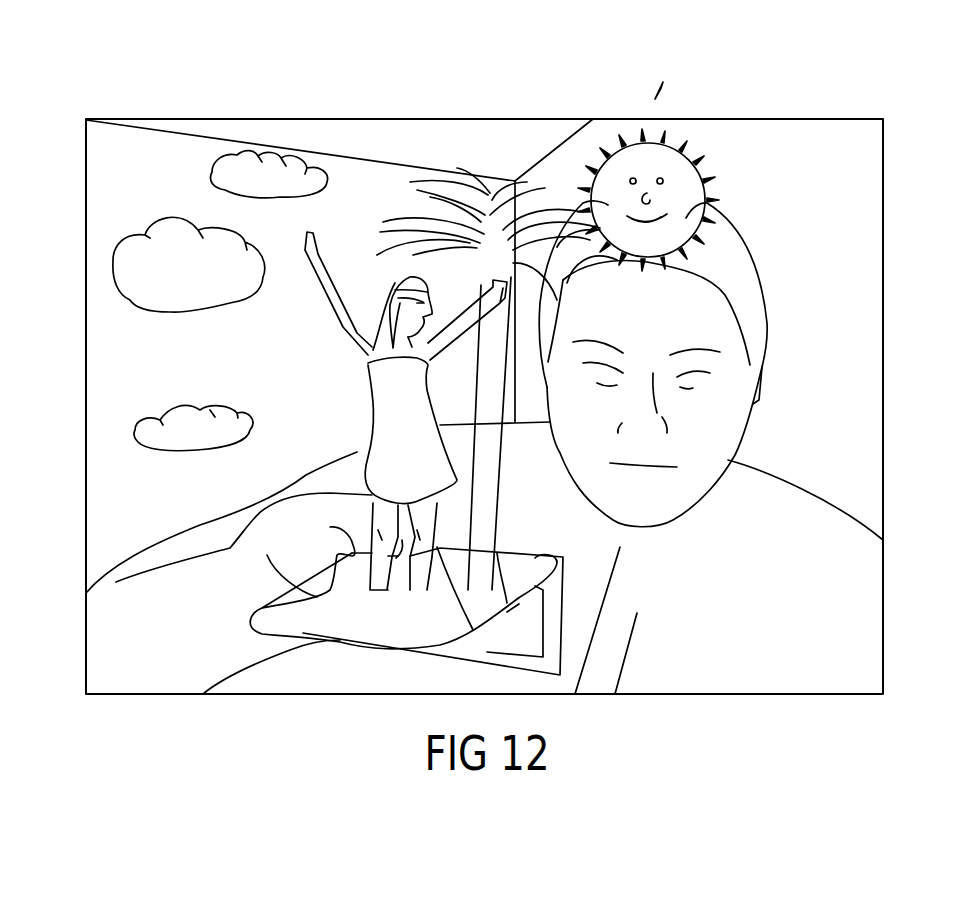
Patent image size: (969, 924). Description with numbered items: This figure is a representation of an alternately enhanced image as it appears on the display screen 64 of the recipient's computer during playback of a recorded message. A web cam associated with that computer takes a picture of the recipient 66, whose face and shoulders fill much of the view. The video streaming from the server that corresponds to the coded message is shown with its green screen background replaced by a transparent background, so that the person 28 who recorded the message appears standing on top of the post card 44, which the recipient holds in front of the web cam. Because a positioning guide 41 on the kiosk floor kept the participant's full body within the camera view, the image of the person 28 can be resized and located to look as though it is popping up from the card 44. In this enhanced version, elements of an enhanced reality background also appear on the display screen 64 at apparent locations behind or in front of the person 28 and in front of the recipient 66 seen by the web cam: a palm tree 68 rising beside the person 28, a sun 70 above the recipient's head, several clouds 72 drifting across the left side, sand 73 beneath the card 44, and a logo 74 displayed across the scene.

The person 28 is at (372, 410).
The positioning guide 41 is at (490, 640).
The card 44 is at (552, 647).
The display screen 64 is at (660, 84).
The recipient 66 is at (740, 232).
The palm tree 68 is at (448, 185).
The sun 70 is at (633, 140).
The clouds 72 is at (260, 152).
The sand 73 is at (388, 633).
The logo 74 is at (307, 430).